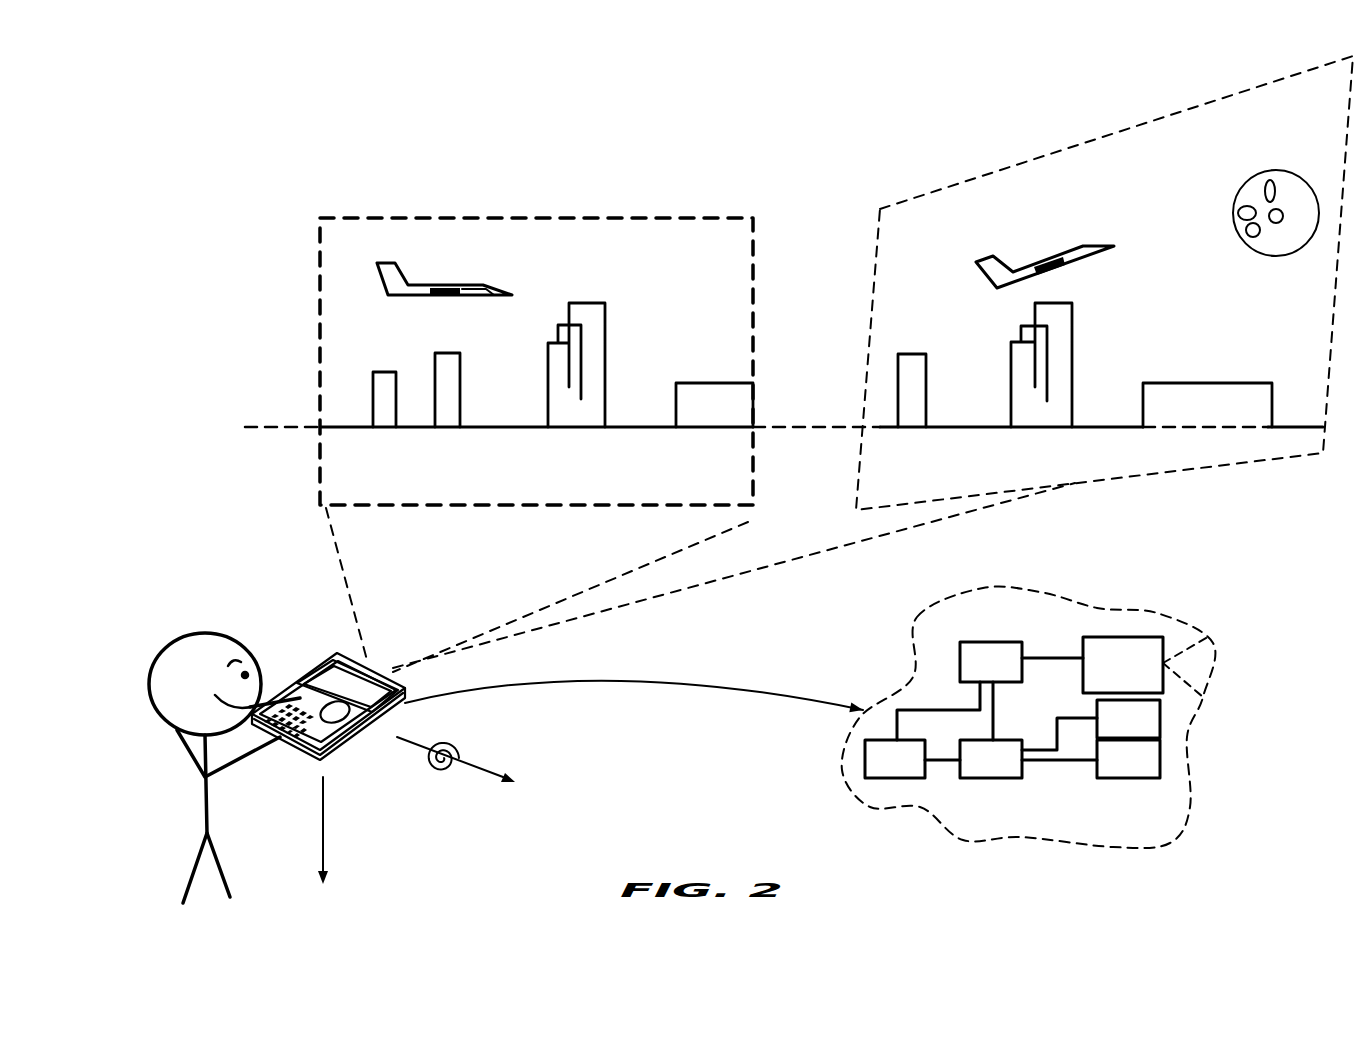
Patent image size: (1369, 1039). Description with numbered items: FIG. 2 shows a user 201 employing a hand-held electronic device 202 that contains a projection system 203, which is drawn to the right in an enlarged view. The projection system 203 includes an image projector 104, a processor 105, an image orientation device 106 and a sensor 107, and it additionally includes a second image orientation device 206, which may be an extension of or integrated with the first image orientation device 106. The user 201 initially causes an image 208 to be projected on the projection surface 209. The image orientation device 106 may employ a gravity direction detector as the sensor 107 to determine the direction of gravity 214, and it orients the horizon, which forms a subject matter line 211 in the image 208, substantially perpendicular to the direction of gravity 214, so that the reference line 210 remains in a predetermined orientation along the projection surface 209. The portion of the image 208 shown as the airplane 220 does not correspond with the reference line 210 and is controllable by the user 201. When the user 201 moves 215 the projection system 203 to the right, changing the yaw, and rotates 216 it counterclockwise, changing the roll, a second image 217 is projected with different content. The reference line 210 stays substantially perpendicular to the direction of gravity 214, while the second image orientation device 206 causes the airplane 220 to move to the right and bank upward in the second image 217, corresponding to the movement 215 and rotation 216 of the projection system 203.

The user 201 is at (207, 797).
The hand-held electronic device 202 is at (313, 667).
The projection system 203 is at (915, 655).
The image 208 is at (319, 300).
The projection surface 209 is at (838, 220).
The reference line 210 is at (283, 425).
The subject matter line 211 is at (482, 428).
The direction of gravity 214 is at (322, 852).
The movement to the right 215 is at (497, 772).
The counterclockwise rotation 216 is at (472, 752).
The second image 217 is at (870, 328).
The airplane 220 is at (445, 290).
The image projector 104 is at (1123, 663).
The processor 105 is at (990, 663).
The image orientation device 106 is at (990, 760).
The sensor 107 is at (1120, 758).
The second image orientation device 206 is at (1120, 718).